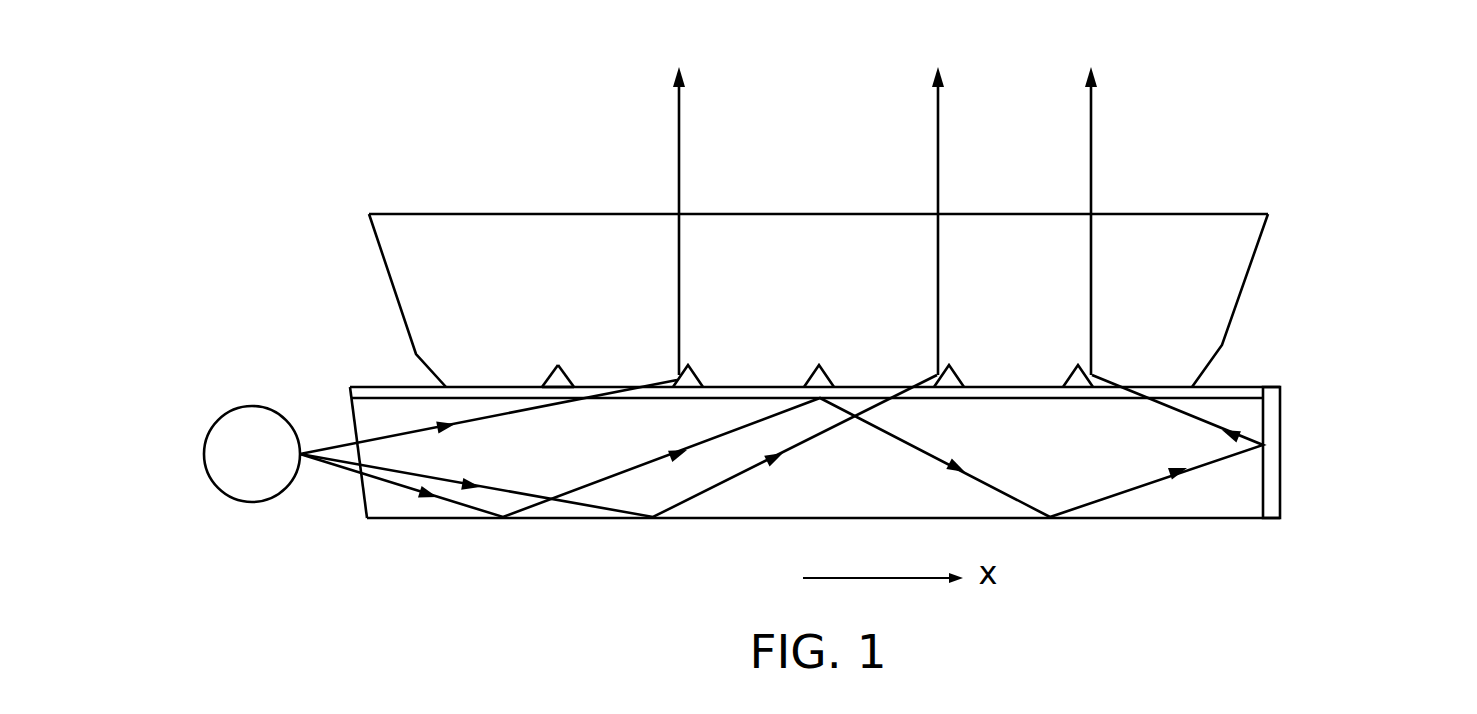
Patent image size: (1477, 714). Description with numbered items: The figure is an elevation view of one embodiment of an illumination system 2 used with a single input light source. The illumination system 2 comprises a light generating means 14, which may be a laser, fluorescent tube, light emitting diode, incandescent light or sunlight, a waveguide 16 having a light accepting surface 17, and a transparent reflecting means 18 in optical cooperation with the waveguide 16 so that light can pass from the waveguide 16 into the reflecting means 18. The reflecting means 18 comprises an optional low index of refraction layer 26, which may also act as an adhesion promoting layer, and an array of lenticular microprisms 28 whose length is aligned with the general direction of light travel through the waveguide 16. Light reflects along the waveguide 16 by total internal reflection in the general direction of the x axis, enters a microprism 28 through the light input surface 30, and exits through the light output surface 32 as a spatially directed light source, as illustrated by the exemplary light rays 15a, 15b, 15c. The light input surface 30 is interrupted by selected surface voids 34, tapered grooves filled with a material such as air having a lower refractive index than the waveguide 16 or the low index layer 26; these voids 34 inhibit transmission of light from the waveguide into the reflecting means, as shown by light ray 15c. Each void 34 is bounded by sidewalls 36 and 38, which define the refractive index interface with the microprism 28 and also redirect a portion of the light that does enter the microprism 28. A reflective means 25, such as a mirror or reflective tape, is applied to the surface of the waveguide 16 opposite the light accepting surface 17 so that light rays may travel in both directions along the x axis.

The illumination system 2 is at (1375, 317).
The light generating means 14 is at (228, 498).
The light ray 15a is at (493, 418).
The light ray 15b is at (827, 432).
The light ray 15c is at (1017, 495).
The waveguide 16 is at (428, 528).
The light accepting surface 17 is at (357, 487).
The transparent reflecting means 18 is at (1278, 214).
The reflective means 25 is at (1272, 425).
The low index of refraction layer 26 is at (1220, 387).
The lenticular microprism 28 is at (463, 293).
The light input surface 30 is at (788, 383).
The light output surface 32 is at (1243, 212).
The surface void 34 is at (557, 380).
The sidewall 36 is at (550, 385).
The sidewall 38 is at (567, 378).